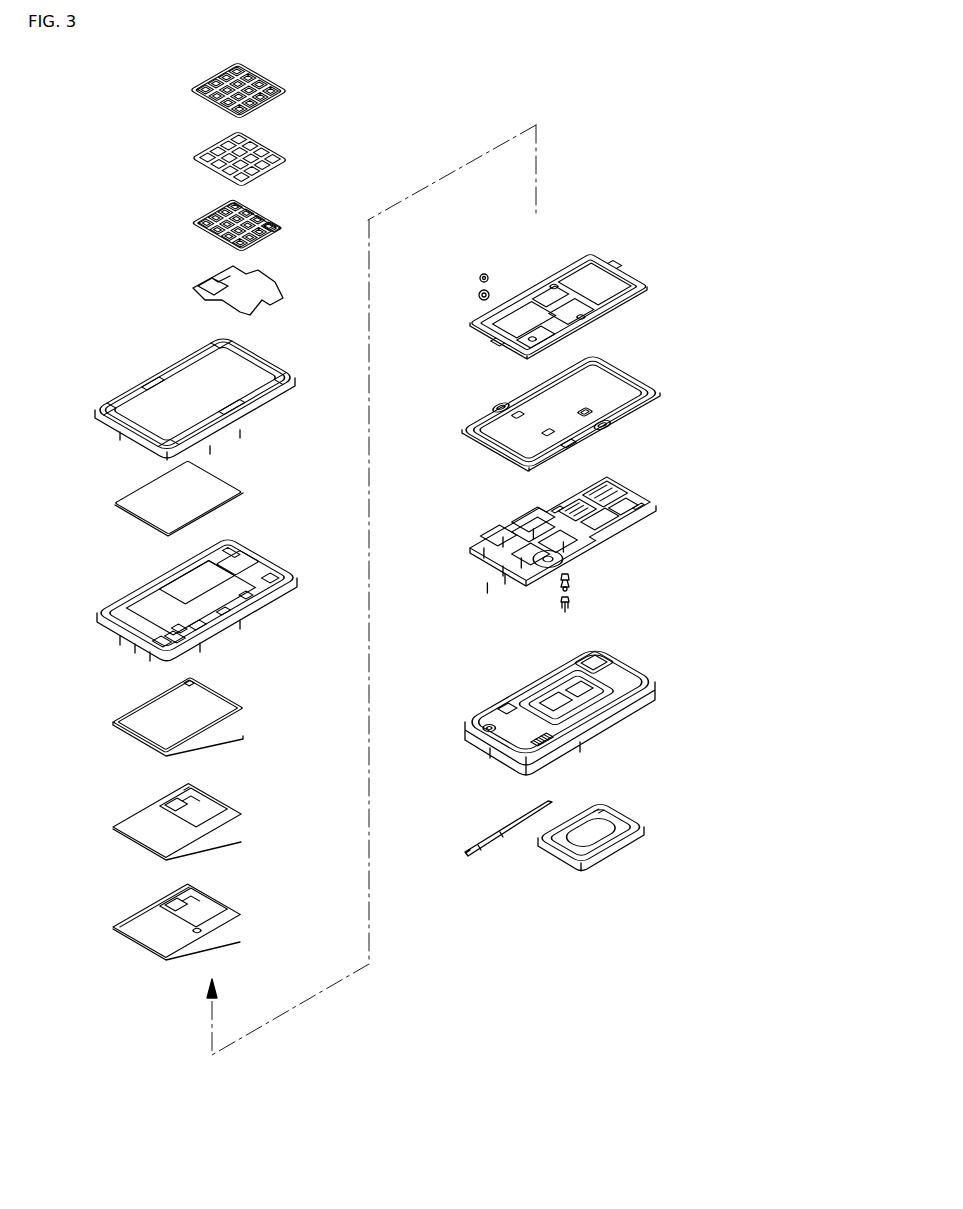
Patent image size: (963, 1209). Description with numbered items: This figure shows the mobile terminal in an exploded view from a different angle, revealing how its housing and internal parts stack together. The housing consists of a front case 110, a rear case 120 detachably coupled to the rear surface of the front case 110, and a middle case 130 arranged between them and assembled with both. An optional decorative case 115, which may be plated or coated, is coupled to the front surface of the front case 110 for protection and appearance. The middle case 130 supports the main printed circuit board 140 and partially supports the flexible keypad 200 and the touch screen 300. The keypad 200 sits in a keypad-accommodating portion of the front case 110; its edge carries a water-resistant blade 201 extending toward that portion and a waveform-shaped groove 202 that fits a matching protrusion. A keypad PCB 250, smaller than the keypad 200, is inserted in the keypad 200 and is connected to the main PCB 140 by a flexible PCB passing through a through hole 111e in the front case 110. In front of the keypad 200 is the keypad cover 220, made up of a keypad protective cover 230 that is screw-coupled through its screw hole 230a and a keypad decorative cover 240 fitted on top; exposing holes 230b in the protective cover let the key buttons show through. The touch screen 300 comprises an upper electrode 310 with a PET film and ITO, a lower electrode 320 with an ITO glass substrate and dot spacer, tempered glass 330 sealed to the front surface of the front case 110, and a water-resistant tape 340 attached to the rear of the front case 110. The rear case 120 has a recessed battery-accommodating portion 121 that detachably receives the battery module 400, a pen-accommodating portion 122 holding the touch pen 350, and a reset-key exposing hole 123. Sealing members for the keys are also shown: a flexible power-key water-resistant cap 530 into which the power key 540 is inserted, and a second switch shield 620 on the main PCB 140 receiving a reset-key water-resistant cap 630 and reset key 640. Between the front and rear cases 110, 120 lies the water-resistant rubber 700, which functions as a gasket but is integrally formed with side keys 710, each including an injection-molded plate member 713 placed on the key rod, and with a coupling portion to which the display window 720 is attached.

The front case 110 is at (97, 614).
The through hole 111e is at (240, 563).
The decorative case 115 is at (95, 412).
The rear case 120 is at (655, 688).
The battery-accommodating portion 121 is at (606, 728).
The pen-accommodating portion 122 is at (477, 737).
The reset-key exposing hole 123 is at (550, 757).
The middle case 130 is at (644, 288).
The main printed circuit board 140 is at (648, 511).
The flexible keypad 200 is at (188, 225).
The water-resistant blade 201 is at (267, 228).
The groove 202 is at (280, 237).
The keypad cover 220 is at (115, 92).
The keypad protective cover 230 is at (190, 159).
The screw hole 230a is at (278, 93).
The exposing holes 230b is at (287, 165).
The keypad decorative cover 240 is at (187, 90).
The keypad PCB 250 is at (217, 295).
The touch screen 300 is at (108, 844).
The upper electrode 310 is at (243, 815).
The lower electrode 320 is at (243, 915).
The tempered glass 330 is at (235, 490).
The water-resistant tape 340 is at (243, 709).
The touch pen 350 is at (483, 848).
The battery module 400 is at (598, 868).
The power-key water-resistant cap 530 is at (478, 296).
The power key 540 is at (478, 277).
The second switch shield 620 is at (585, 557).
The reset-key water-resistant cap 630 is at (572, 583).
The reset key 640 is at (572, 606).
The water-resistant rubber 700 is at (636, 369).
The side key 710 is at (490, 400).
The plate member 713 is at (545, 435).
The display window 720 is at (620, 412).